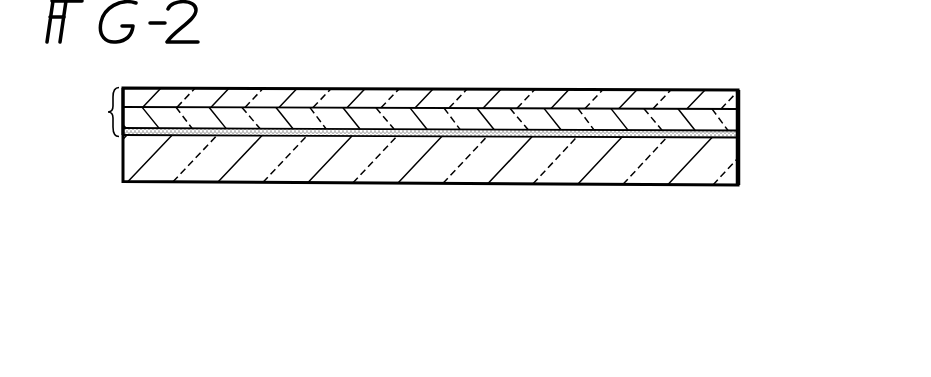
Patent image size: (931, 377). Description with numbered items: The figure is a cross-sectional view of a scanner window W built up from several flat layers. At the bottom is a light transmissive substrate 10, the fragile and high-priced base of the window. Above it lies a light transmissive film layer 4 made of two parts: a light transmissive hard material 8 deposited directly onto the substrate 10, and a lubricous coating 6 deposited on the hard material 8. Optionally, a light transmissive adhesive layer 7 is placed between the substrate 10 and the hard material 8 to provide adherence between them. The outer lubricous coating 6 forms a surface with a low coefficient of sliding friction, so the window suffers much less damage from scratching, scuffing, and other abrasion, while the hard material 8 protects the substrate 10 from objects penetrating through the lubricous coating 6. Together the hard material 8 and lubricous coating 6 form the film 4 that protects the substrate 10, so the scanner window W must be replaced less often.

The scanner window W is at (470, 83).
The light transmissive film layer 4 is at (108, 115).
The lubricous coating 6 is at (682, 100).
The light transmissive hard material 8 is at (729, 120).
The light transmissive adhesive layer 7 is at (739, 132).
The light transmissive substrate 10 is at (650, 172).